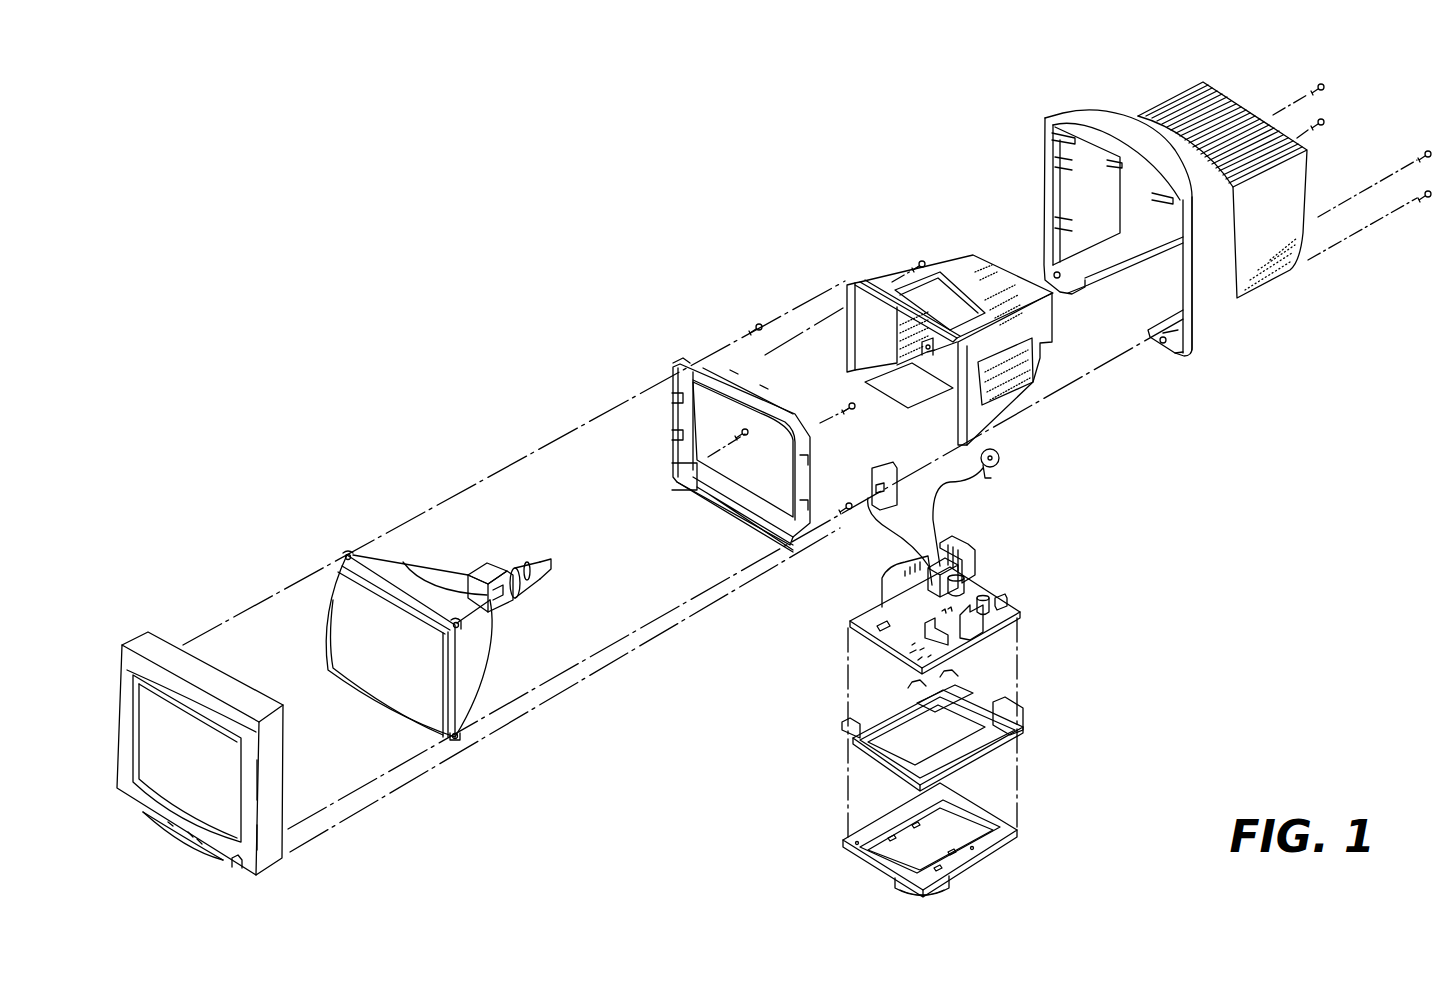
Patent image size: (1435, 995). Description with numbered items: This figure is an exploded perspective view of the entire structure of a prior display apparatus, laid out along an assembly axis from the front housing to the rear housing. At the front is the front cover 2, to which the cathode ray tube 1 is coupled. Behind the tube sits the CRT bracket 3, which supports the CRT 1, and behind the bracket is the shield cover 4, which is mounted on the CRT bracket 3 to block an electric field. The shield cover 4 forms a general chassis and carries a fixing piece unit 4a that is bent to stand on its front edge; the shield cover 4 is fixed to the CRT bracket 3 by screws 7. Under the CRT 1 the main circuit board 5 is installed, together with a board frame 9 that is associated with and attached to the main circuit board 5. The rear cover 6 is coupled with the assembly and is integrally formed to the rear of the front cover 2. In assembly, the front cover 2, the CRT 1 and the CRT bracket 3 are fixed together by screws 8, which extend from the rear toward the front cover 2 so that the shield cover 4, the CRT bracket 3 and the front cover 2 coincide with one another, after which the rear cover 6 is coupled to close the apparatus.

The cathode ray tube 1 is at (345, 587).
The front cover 2 is at (127, 673).
The CRT bracket 3 is at (715, 377).
The shield cover 4 is at (942, 300).
The fixing piece unit 4a is at (883, 293).
The main circuit board 5 is at (842, 622).
The rear cover 6 is at (1162, 120).
The screws 7 is at (918, 262).
The screws 8 is at (756, 323).
The board frame 9 is at (867, 745).